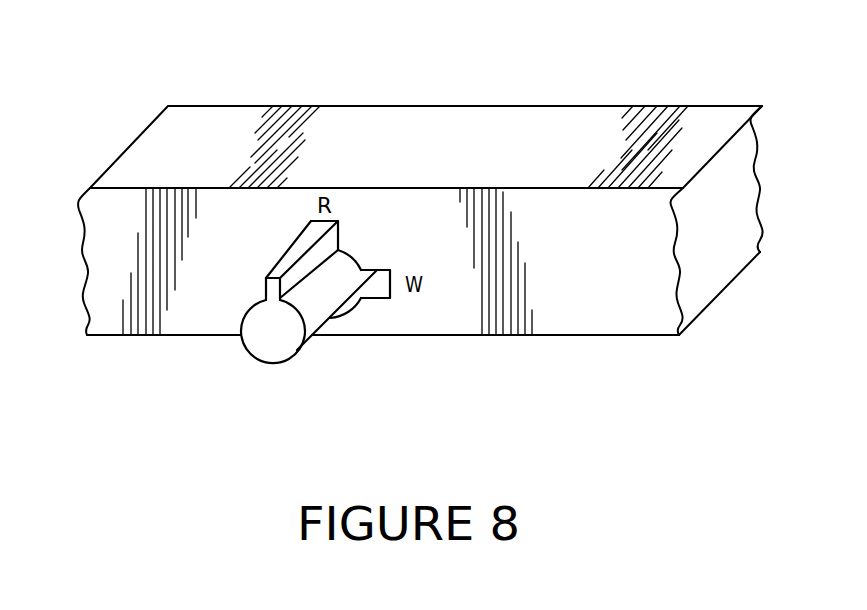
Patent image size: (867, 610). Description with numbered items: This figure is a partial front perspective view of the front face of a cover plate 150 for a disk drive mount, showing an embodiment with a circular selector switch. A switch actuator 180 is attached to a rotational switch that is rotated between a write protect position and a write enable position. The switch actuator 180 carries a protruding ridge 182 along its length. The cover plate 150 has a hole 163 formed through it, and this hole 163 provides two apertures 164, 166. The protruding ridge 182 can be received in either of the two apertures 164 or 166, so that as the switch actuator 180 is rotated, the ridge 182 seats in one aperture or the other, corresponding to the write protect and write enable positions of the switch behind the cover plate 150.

The cover plate 150 is at (609, 310).
The hole 163 is at (350, 312).
The aperture 164 is at (396, 298).
The aperture 166 is at (328, 221).
The switch actuator 180 is at (267, 350).
The protruding ridge 182 is at (268, 283).